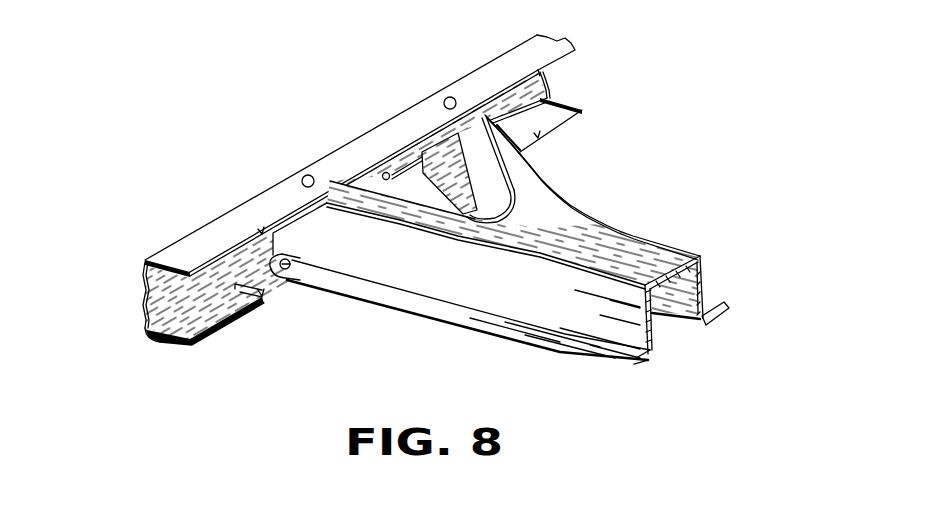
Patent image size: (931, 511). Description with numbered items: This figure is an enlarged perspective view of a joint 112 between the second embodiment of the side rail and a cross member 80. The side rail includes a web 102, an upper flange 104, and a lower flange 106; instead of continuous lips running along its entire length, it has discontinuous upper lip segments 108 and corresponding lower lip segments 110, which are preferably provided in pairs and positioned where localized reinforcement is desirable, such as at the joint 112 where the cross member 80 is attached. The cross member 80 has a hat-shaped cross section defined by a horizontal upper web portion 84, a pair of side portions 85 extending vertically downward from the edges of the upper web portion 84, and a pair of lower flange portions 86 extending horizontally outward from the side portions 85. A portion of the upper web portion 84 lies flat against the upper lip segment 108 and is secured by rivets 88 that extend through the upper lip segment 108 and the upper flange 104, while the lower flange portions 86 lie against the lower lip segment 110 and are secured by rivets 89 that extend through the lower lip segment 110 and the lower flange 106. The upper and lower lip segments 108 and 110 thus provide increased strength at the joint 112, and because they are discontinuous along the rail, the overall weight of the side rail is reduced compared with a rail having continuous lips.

The cross member 80 is at (660, 260).
The upper web portion 84 is at (549, 208).
The side portions 85 is at (705, 279).
The lower flange portions 86 is at (412, 303).
The rivets 88 is at (450, 97).
The rivets 89 is at (292, 268).
The web 102 is at (142, 295).
The upper flange 104 is at (173, 262).
The lower flange 106 is at (202, 338).
The upper lip segments 108 is at (386, 172).
The lower lip segments 110 is at (263, 300).
The joint 112 is at (322, 95).